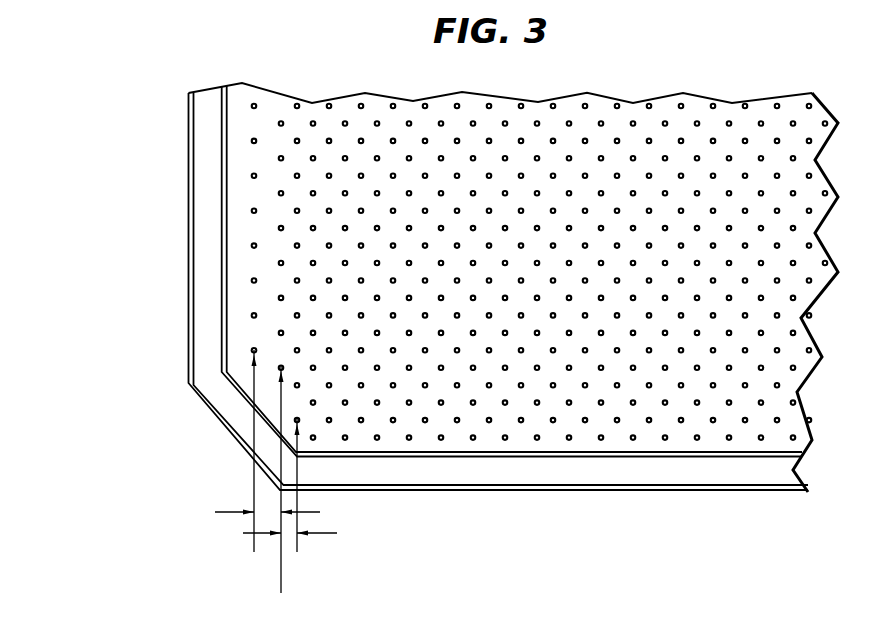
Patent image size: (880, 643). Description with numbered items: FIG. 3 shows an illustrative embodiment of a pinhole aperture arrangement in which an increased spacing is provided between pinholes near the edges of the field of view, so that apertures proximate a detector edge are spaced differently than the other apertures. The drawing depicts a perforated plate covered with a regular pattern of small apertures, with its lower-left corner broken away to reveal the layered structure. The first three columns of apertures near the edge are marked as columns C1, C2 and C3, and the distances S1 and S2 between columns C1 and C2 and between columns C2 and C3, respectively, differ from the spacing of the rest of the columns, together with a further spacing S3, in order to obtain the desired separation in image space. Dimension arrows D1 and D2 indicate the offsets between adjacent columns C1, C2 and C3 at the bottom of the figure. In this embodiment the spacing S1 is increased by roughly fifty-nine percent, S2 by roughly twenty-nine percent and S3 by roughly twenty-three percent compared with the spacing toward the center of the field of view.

The spacing distance S1 is at (313, 436).
The spacing distance S2 is at (297, 419).
The spacing distance S3 is at (313, 401).
The column C1 is at (255, 468).
The column C2 is at (283, 497).
The column C3 is at (300, 503).
The first offset distance D1 is at (256, 513).
The second offset distance D2 is at (302, 534).